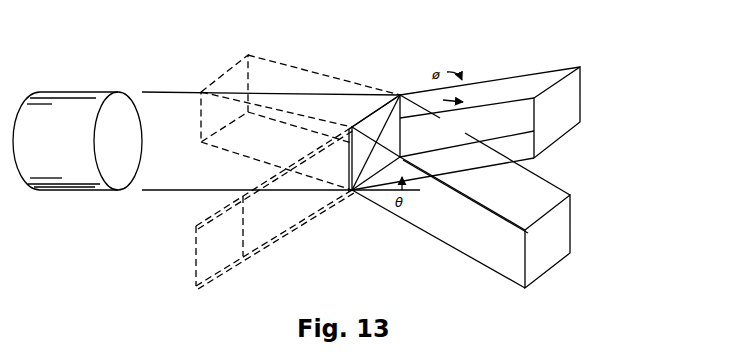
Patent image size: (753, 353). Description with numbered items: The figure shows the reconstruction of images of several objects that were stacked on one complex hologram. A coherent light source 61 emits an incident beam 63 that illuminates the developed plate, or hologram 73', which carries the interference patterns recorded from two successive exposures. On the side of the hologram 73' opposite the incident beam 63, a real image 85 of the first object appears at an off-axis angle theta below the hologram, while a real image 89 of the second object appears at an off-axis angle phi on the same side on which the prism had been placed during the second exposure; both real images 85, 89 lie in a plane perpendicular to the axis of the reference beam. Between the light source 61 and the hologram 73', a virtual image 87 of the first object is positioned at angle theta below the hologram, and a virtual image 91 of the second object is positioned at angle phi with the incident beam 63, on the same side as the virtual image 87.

The light source 61 is at (65, 194).
The incident beam 63 is at (188, 194).
The hologram 73' is at (412, 143).
The virtual image of the second object 91 is at (238, 78).
The virtual image of the first object 87 is at (236, 244).
The real image of the second object 89 is at (580, 118).
The real image of the first object 85 is at (579, 249).